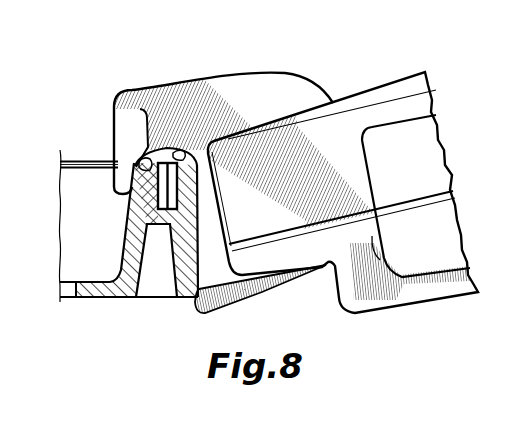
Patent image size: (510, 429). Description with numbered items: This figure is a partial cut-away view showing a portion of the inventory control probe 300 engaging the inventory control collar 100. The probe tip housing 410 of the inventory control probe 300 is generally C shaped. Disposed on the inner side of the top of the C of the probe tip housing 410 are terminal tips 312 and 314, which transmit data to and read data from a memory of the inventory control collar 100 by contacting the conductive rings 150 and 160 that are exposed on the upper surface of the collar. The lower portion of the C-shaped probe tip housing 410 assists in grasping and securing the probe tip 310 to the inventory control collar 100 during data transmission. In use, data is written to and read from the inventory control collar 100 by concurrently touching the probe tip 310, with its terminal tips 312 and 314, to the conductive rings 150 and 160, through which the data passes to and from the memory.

The inventory control collar 100 is at (88, 300).
The conductive ring 150 is at (142, 202).
The conductive ring 160 is at (179, 200).
The inventory control probe 300 is at (338, 93).
The probe tip 310 is at (285, 66).
The terminal tip 312 is at (172, 152).
The terminal tip 314 is at (140, 109).
The probe tip housing 410 is at (247, 111).